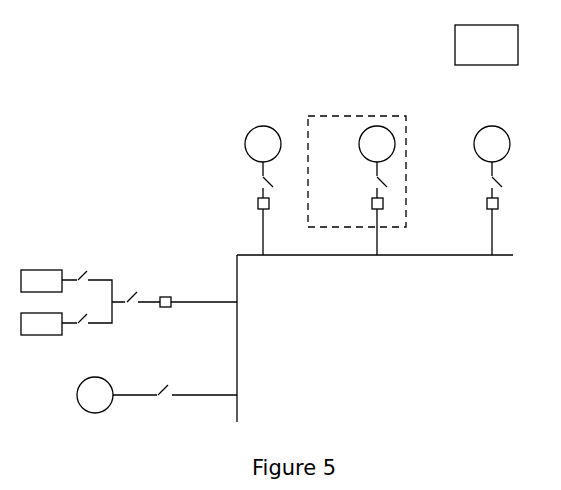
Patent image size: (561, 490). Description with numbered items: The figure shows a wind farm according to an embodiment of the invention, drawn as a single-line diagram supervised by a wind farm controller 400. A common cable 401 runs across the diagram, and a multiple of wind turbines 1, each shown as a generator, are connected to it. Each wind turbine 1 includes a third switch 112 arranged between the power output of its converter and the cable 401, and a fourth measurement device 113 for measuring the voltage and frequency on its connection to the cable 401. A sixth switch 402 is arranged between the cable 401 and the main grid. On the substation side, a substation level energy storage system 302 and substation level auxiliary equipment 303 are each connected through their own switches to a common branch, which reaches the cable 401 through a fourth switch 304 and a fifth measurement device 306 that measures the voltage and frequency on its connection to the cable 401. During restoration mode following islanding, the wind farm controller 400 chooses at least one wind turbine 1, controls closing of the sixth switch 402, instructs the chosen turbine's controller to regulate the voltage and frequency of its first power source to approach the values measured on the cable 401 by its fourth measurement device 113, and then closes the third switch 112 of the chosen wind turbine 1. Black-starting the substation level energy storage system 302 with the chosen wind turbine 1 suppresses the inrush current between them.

The wind turbine 1 is at (273, 123).
The third switch 112 is at (262, 185).
The fourth measurement device 113 is at (258, 205).
The substation level energy storage system 302 is at (66, 286).
The substation level auxiliary equipment 303 is at (66, 318).
The fourth switch 304 is at (136, 307).
The fifth measurement device 306 is at (172, 306).
The wind farm controller 400 is at (486, 45).
The cable 401 is at (444, 256).
The sixth switch 402 is at (165, 398).